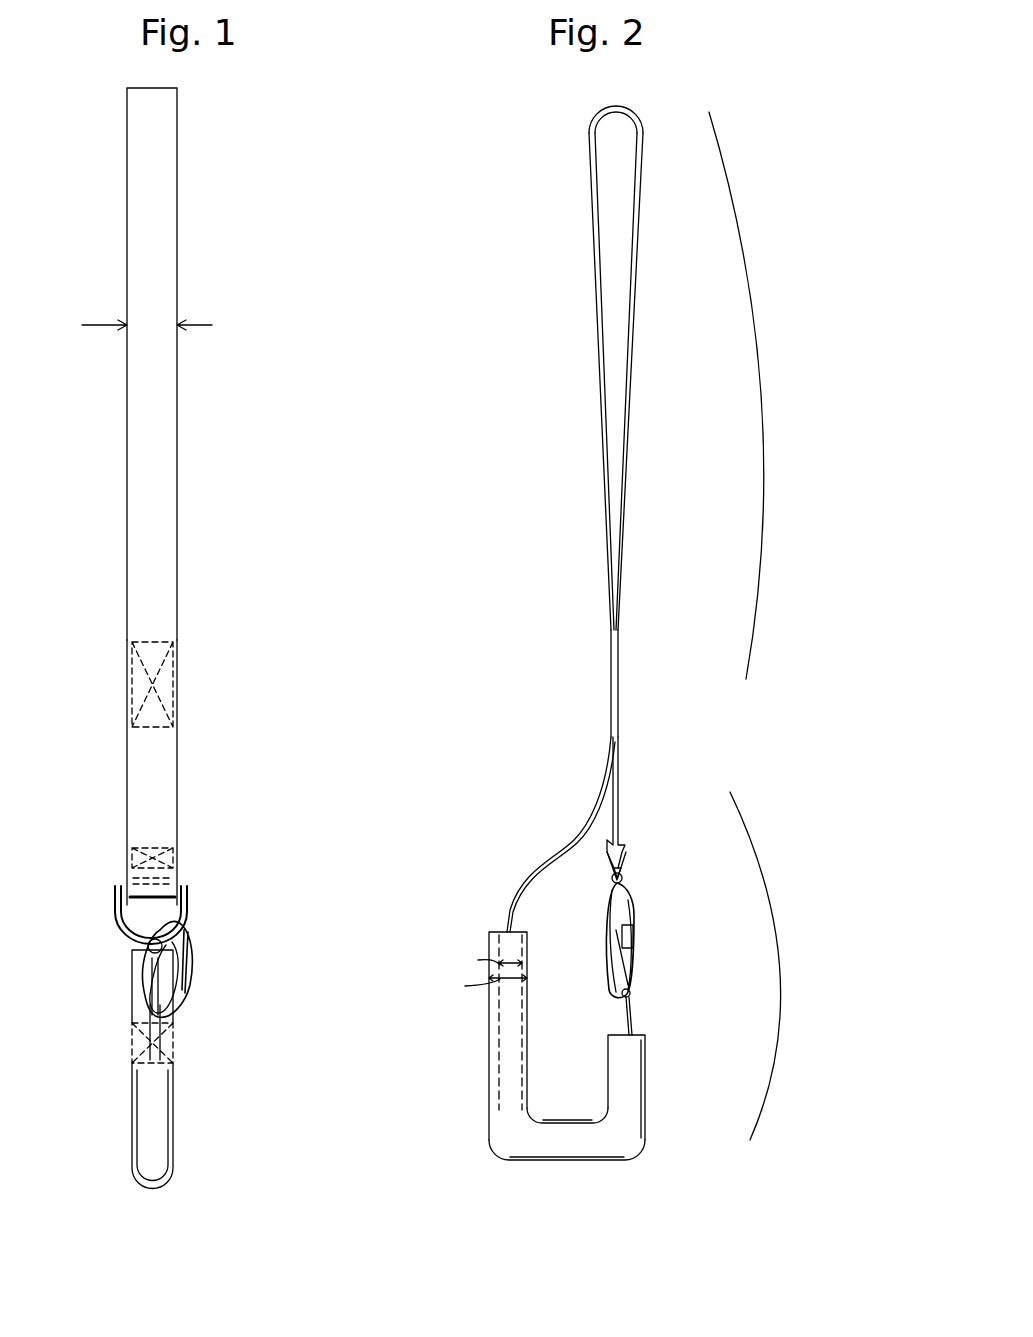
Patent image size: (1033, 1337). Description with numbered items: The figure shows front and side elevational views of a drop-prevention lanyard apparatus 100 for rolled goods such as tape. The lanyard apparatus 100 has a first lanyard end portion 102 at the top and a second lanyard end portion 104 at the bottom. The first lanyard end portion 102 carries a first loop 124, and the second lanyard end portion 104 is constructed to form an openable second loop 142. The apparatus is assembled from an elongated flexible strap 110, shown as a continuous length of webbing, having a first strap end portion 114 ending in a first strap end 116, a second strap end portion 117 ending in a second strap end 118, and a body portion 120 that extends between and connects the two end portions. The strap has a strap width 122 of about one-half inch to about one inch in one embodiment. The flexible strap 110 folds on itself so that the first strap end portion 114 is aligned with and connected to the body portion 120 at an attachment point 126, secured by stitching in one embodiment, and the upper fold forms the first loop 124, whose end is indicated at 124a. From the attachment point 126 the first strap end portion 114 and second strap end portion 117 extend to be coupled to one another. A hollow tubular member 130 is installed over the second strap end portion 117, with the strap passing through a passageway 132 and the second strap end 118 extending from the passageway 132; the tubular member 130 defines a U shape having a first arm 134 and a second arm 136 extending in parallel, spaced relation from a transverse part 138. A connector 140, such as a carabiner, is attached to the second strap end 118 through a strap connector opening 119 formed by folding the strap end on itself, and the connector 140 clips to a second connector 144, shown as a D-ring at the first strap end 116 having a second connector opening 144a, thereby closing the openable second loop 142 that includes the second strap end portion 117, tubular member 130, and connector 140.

In FIG. 1, the lanyard apparatus 100 is at (147, 626).
In FIG. 2, the lanyard apparatus 100 is at (584, 628).
In FIG. 2, the first lanyard end portion 102 is at (456, 220).
In FIG. 1, the second lanyard end portion 104 is at (393, 1108).
In FIG. 1, the flexible strap 110 is at (153, 496).
In FIG. 2, the flexible strap 110 is at (619, 723).
In FIG. 1, the first strap end portion 114 is at (158, 770).
In FIG. 2, the first strap end portion 114 is at (592, 582).
In FIG. 1, the first strap end 116 is at (137, 892).
In FIG. 2, the first strap end 116 is at (622, 868).
In FIG. 1, the second strap end portion 117 is at (133, 945).
In FIG. 2, the second strap end portion 117 is at (535, 880).
In FIG. 1, the second strap end 118 is at (167, 1060).
In FIG. 2, the second strap end 118 is at (630, 995).
In FIG. 2, the strap connector opening 119 is at (613, 878).
In FIG. 1, the body portion 120 is at (158, 470).
In FIG. 2, the body portion 120 is at (625, 497).
In FIG. 1, the strap width 122 is at (122, 325).
In FIG. 2, the first loop 124 is at (713, 392).
In FIG. 2, the strap loop end 124a is at (603, 250).
In FIG. 1, the attachment point 126 is at (150, 686).
In FIG. 2, the attachment point 126 is at (614, 700).
In FIG. 1, the tubular member 130 is at (163, 1126).
In FIG. 2, the tubular member 130 is at (563, 1062).
In FIG. 1, the passageway 132 is at (126, 1055).
In FIG. 2, the passageway 132 is at (503, 918).
In FIG. 1, the first arm 134 is at (140, 1113).
In FIG. 2, the first arm 134 is at (630, 1077).
In FIG. 1, the second arm 136 is at (137, 973).
In FIG. 2, the second arm 136 is at (500, 1025).
In FIG. 2, the transverse part 138 is at (550, 1140).
In FIG. 1, the connector 140 is at (183, 985).
In FIG. 2, the connector 140 is at (626, 890).
In FIG. 2, the openable second loop 142 is at (785, 968).
In FIG. 1, the second connector 144 is at (118, 900).
In FIG. 1, the second connector opening 144a is at (135, 907).